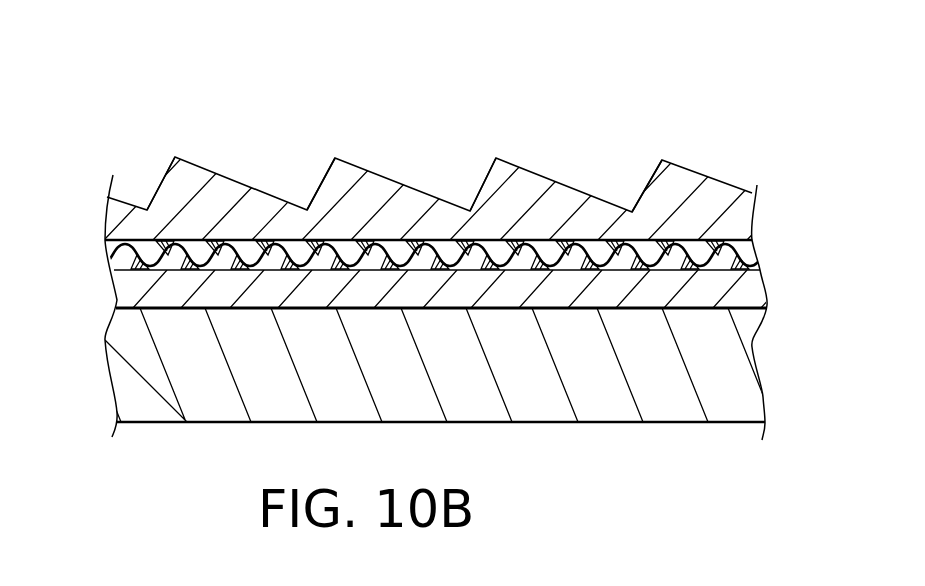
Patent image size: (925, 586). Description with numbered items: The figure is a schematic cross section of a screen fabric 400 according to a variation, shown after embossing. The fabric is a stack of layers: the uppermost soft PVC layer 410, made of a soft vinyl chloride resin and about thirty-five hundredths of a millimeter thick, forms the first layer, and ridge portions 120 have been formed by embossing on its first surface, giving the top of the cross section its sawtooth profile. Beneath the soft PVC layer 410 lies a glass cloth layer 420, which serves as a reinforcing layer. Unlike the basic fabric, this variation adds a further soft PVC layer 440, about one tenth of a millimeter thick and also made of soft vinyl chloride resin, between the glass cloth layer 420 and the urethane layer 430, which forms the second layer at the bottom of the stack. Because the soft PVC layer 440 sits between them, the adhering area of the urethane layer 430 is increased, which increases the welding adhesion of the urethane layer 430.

The screen fabric 400 is at (84, 124).
The ridge portions 120 is at (175, 140).
The soft PVC layer 410 is at (740, 214).
The glass cloth layer 420 is at (748, 252).
The soft PVC layer 440 is at (750, 287).
The urethane layer 430 is at (740, 355).